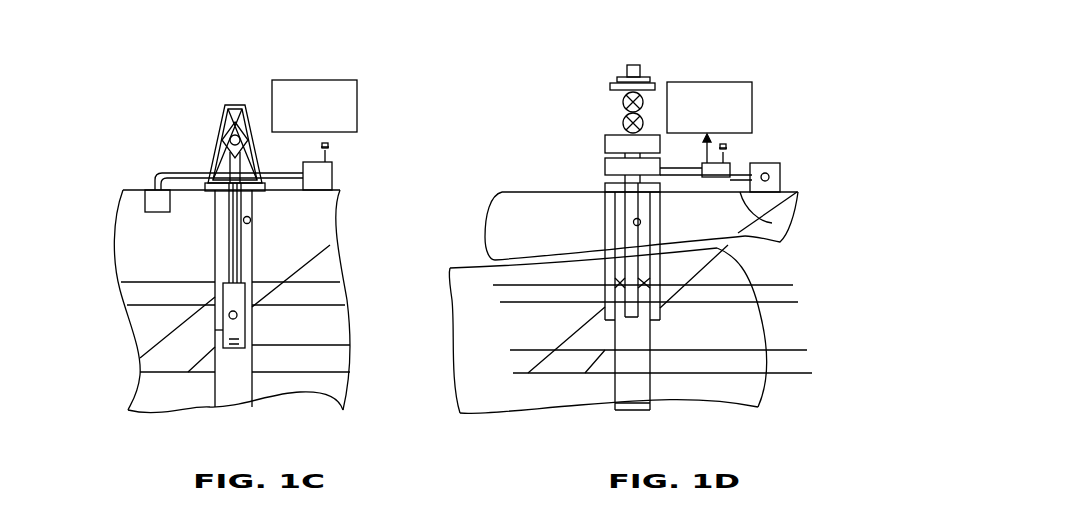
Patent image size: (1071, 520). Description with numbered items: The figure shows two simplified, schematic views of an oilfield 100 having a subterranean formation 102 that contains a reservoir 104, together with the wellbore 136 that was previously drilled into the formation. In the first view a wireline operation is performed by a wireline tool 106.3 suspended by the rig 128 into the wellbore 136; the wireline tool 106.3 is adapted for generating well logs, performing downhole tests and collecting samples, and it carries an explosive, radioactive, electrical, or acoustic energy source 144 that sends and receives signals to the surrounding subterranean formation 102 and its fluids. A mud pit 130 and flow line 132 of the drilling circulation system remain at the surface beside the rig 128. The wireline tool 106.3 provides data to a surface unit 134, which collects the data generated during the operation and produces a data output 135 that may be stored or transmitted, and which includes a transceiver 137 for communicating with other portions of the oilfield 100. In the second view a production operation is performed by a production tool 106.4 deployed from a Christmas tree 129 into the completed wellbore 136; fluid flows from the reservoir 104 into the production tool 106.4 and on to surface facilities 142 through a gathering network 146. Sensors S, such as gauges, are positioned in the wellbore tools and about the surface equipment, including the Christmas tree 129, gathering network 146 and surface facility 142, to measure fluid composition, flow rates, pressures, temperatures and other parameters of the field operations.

In FIG. 1C, the oilfield 100 is at (207, 113).
In FIG. 1D, the oilfield 100 is at (584, 143).
In FIG. 1C, the subterranean formation 102 is at (263, 288).
In FIG. 1D, the subterranean formation 102 is at (699, 264).
In FIG. 1C, the reservoir 104 is at (312, 331).
In FIG. 1D, the reservoir 104 is at (736, 335).
In FIG. 1C, the wireline tool 106.3 is at (224, 332).
In FIG. 1D, the production tool 106.4 is at (622, 293).
In FIG. 1C, the rig 128 is at (215, 142).
In FIG. 1D, the Christmas tree 129 is at (641, 70).
In FIG. 1C, the mud pit 130 is at (153, 224).
In FIG. 1C, the flow line 132 is at (157, 174).
In FIG. 1C, the surface unit 134 is at (333, 178).
In FIG. 1D, the surface unit 134 is at (703, 163).
In FIG. 1C, the data output 135 is at (310, 80).
In FIG. 1D, the data output 135 is at (752, 112).
In FIG. 1C, the wellbore 136 is at (251, 221).
In FIG. 1D, the wellbore 136 is at (641, 222).
In FIG. 1C, the transceiver 137 is at (330, 150).
In FIG. 1D, the transceiver 137 is at (727, 152).
In FIG. 1D, the surface facilities 142 is at (781, 178).
In FIG. 1C, the energy source 144 is at (244, 345).
In FIG. 1D, the gathering network 146 is at (782, 223).
In FIG. 1C, the sensor S is at (228, 313).
In FIG. 1D, the sensor S is at (768, 174).